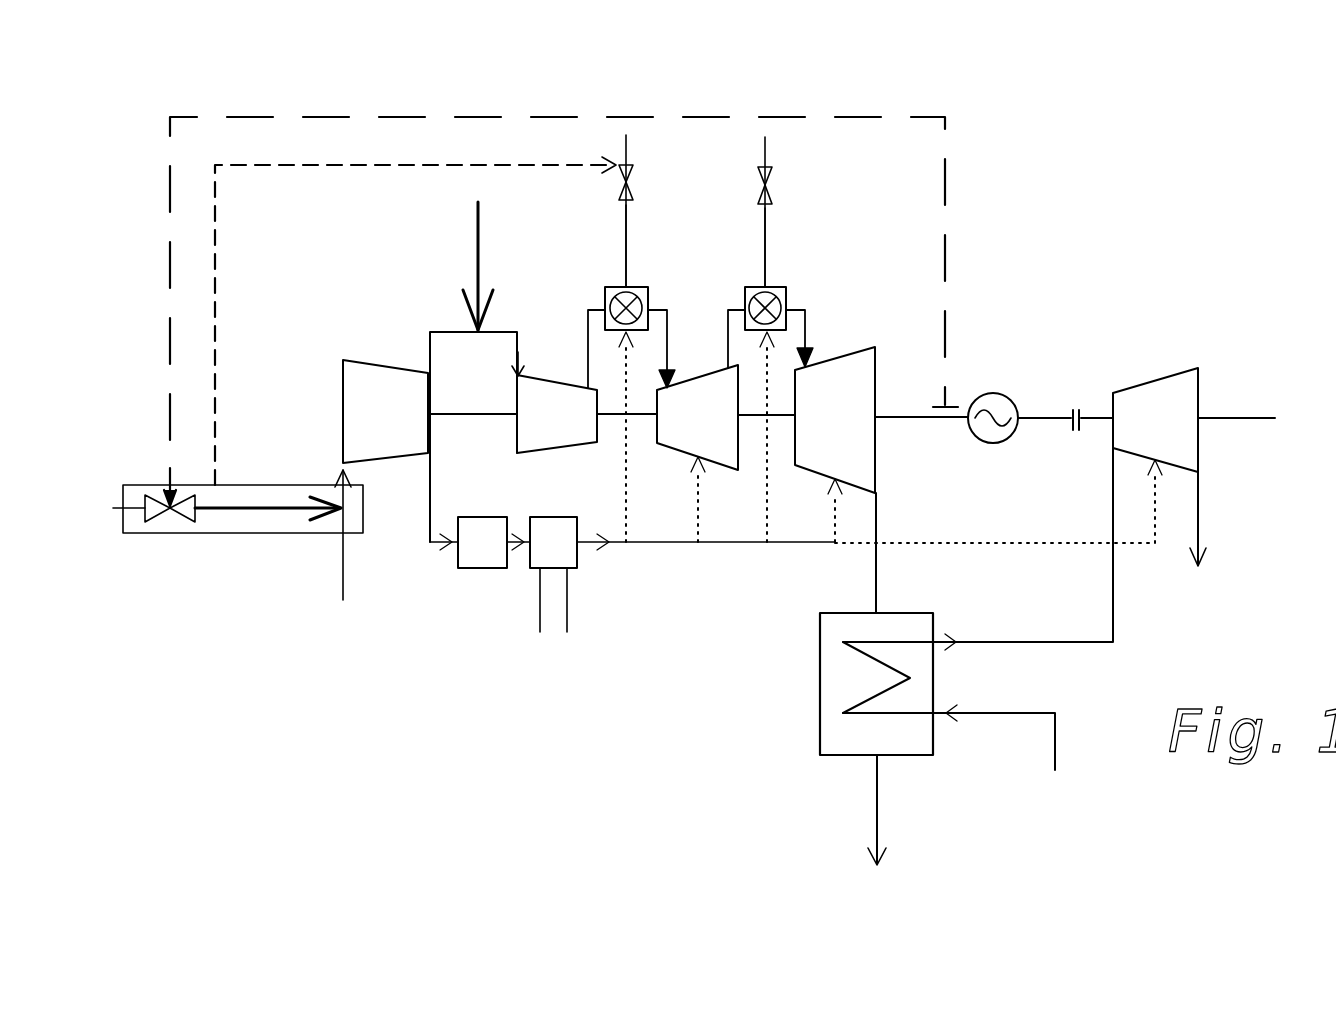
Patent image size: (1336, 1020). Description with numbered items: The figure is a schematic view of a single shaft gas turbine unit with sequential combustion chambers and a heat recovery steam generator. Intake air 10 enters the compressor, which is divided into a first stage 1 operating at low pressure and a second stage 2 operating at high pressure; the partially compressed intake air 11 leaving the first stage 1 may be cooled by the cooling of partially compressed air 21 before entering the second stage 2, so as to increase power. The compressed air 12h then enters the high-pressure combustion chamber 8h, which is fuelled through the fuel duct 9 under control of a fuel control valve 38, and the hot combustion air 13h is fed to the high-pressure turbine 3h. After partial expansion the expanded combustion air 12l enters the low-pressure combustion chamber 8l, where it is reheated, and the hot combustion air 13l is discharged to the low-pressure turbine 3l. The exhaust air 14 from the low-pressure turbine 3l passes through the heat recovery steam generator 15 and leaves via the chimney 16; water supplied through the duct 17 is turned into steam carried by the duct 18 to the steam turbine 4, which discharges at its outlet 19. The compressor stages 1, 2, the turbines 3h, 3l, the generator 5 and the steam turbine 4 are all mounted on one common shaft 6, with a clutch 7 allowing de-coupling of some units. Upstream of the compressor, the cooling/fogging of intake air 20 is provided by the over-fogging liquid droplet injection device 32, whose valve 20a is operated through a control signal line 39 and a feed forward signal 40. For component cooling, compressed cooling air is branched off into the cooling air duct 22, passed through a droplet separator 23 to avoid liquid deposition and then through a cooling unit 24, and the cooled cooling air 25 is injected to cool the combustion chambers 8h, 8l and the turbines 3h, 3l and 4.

The first stage of compressor 1 is at (404, 438).
The second stage of compressor 2 is at (572, 436).
The high-pressure turbine 3h is at (725, 443).
The low-pressure turbine 3l is at (857, 445).
The steam turbine 4 is at (1175, 445).
The generator 5 is at (997, 392).
The common shaft 6 is at (893, 417).
The clutch 7 is at (1075, 405).
The high-pressure combustion chamber 8h is at (643, 285).
The low-pressure combustion chamber 8l is at (783, 285).
The fuel duct 9 is at (626, 270).
The intake air 10 is at (340, 592).
The partially compressed intake air 11 is at (440, 328).
The compressed air 12h is at (587, 347).
The expanded combustion air 12l is at (725, 325).
The hot combustion air (high-pressure) 13h is at (668, 327).
The hot combustion air (low-pressure) 13l is at (810, 323).
The exhaust air 14 is at (878, 517).
The heat recovery steam generator 15 is at (735, 765).
The chimney 16 is at (875, 795).
The duct to the heat recovery steam generator 17 is at (970, 717).
The duct from the heat recovery steam generator 18 is at (982, 642).
The outlet of the steam turbine 19 is at (1200, 513).
The cooling/fogging of intake air 20 is at (282, 510).
The valve 20a is at (143, 490).
The cooling of partially compressed air 21 is at (482, 235).
The cooling air duct 22 is at (427, 547).
The droplet separator 23 is at (480, 547).
The cooling unit 24 is at (580, 563).
The cooled cooling air 25 is at (673, 547).
The over-fogging liquid droplet injection device 32 is at (153, 535).
The fuel control valve 38 is at (632, 187).
The control signal line 39 is at (472, 113).
The feed forward signal 40 is at (402, 163).